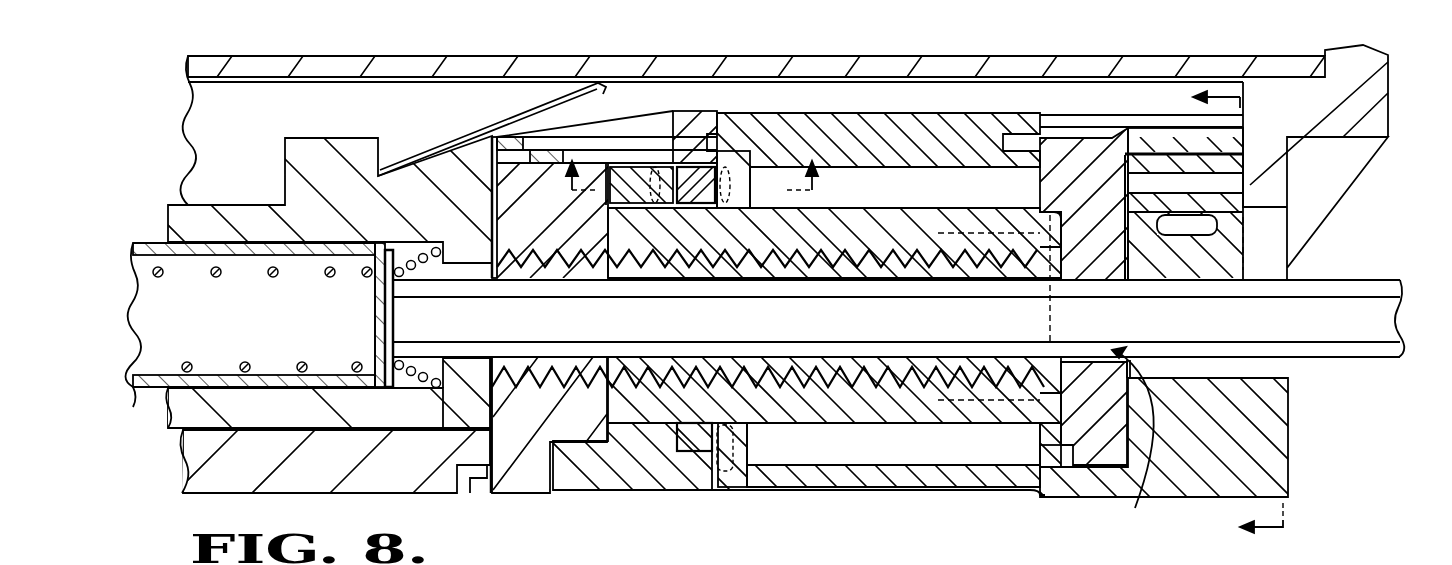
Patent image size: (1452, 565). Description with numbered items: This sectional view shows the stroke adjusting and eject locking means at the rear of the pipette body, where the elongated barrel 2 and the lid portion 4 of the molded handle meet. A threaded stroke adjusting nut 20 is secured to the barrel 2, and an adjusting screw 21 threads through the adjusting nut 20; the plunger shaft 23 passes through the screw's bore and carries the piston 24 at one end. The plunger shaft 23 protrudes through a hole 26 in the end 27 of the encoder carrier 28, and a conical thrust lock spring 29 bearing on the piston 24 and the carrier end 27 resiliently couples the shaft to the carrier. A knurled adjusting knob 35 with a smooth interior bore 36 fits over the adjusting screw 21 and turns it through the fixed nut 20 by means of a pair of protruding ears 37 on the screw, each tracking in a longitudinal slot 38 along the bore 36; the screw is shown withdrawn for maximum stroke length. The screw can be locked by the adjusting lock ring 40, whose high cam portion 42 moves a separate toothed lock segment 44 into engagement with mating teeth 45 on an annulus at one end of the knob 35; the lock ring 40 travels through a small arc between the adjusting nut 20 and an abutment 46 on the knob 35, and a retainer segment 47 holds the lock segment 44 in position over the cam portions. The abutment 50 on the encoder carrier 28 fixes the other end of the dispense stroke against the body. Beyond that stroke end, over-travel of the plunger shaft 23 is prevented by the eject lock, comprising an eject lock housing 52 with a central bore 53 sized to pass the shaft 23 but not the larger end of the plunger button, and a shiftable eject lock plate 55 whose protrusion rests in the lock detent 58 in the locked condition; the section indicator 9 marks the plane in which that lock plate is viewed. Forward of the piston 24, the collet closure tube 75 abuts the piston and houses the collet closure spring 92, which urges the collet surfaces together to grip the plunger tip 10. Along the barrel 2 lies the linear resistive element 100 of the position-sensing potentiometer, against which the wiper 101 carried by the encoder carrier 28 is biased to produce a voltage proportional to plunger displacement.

The barrel 2 is at (229, 470).
The lid portion 4 is at (1383, 82).
The section line 9- 9 is at (1229, 310).
The plunger tip 10 is at (690, 184).
The stroke adjusting nut 20 is at (536, 495).
The adjusting screw 21 is at (603, 365).
The plunger shaft 23 is at (1367, 287).
The piston 24 is at (388, 312).
The hole 26 is at (470, 374).
The end of encoder carrier 27 is at (475, 397).
The encoder carrier 28 is at (259, 425).
The conical thrust lock spring 29 is at (408, 374).
The knurled adjusting knob 35 is at (925, 477).
The interior bore 36 is at (870, 475).
The protruding ears 37 is at (1030, 240).
The longitudinal slot 38 is at (972, 240).
The adjusting lock ring 40 is at (627, 478).
The high cam portion 42 is at (632, 170).
The toothed lock segment 44 is at (698, 170).
The mating teeth 45 is at (730, 163).
The abutment 46 is at (720, 470).
The retainer segment 47 is at (698, 445).
The abutment 50 is at (302, 185).
The eject lock housing 52 is at (1076, 415).
The central bore 53 is at (1133, 444).
The eject lock plate 55 is at (1202, 455).
The lock detent 58 is at (1282, 564).
The collet closure tube 75 is at (144, 394).
The collet closure spring 92 is at (156, 277).
The linear resistive element 100 is at (300, 78).
The potentiometer wiper 101 is at (476, 136).